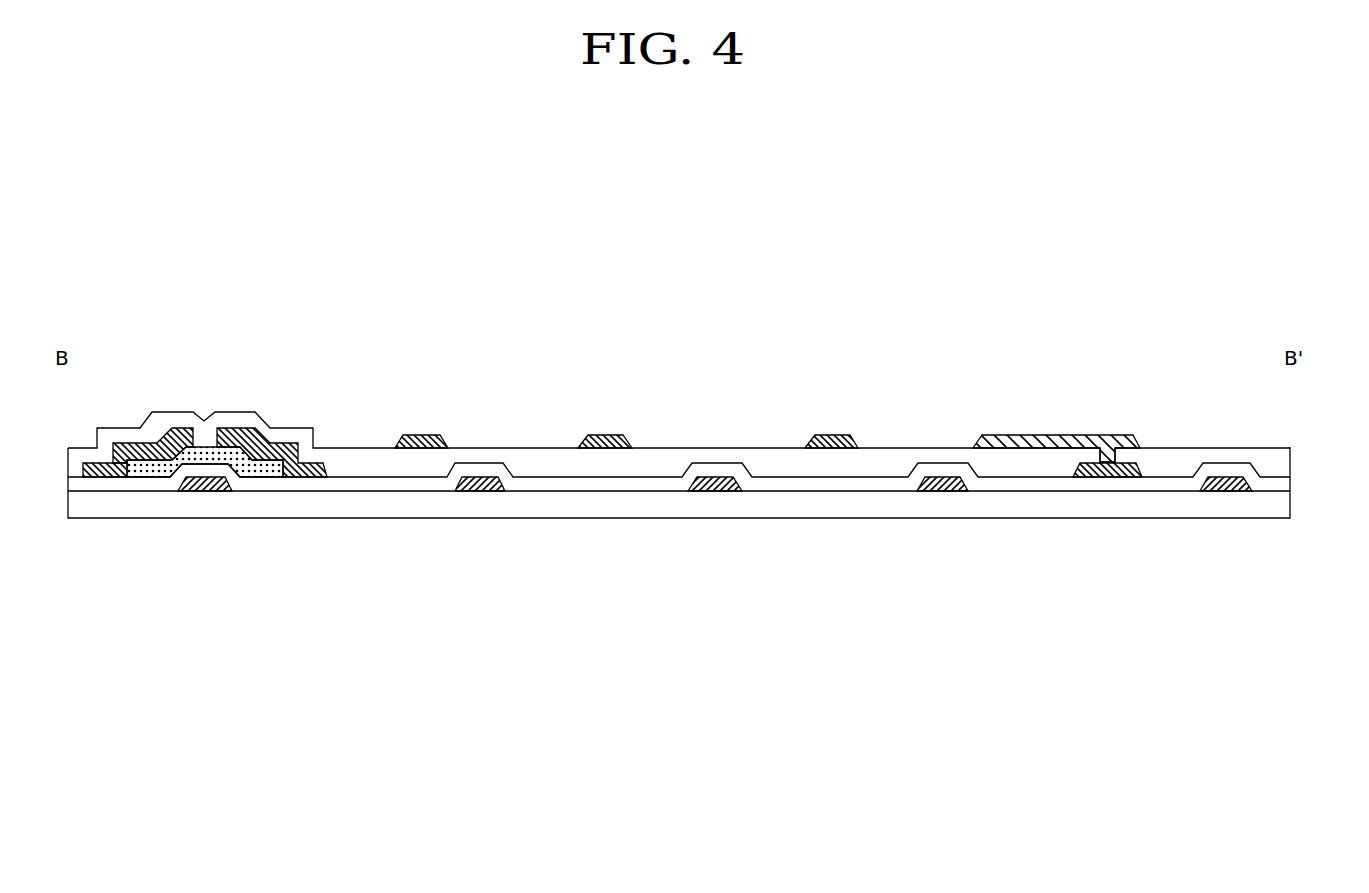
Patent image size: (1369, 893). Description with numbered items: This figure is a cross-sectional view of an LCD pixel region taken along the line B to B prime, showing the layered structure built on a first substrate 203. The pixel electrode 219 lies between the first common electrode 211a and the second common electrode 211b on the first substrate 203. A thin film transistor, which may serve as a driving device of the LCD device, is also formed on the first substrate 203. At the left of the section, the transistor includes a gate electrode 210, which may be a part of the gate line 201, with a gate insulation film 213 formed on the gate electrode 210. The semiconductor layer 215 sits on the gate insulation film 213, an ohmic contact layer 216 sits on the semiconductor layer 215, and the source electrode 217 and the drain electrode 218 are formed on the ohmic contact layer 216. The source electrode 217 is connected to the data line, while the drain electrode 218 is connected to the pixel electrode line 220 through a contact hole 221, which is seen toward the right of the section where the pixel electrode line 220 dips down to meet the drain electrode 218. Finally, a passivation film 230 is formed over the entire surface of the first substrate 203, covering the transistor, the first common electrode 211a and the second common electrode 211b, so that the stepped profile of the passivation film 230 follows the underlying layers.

The gate line 201 is at (1229, 485).
The first substrate 203 is at (1283, 506).
The gate electrode 210 is at (212, 491).
The first common electrode 211a is at (718, 485).
The second common electrode 211b is at (483, 485).
The gate insulation film 213 is at (1283, 483).
The semiconductor layer 215 is at (207, 508).
The ohmic contact layer 216 is at (155, 472).
The source electrode 217 is at (110, 470).
The drain electrode 218 is at (323, 470).
The pixel electrode 219 is at (607, 440).
The pixel electrode line 220 is at (421, 440).
The contact hole 221 is at (1110, 465).
The passivation film 230 is at (1283, 447).